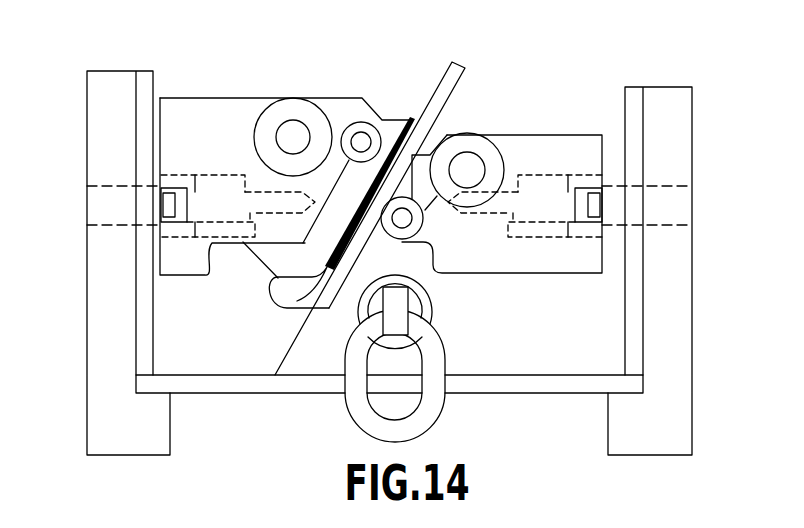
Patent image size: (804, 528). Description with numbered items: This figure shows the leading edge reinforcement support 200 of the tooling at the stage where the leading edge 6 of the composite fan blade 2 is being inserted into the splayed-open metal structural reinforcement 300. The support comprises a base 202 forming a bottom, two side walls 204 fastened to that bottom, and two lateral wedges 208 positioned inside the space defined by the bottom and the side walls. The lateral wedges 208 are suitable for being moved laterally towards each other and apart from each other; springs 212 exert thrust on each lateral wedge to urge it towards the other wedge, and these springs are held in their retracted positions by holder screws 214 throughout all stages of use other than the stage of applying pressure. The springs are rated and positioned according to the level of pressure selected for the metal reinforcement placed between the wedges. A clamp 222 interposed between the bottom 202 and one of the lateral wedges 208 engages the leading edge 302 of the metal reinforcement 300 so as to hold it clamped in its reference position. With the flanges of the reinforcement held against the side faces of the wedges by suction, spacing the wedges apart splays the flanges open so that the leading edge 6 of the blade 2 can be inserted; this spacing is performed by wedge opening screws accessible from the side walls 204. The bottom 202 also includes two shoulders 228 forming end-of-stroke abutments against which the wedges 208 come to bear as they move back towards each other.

The fan blade 2 is at (466, 86).
The leading edge 6 is at (414, 139).
The leading edge reinforcement support 200 is at (577, 104).
The base 202 is at (513, 343).
The side walls 204 is at (109, 172).
The lateral wedges 208 is at (199, 140).
The springs 212 is at (243, 180).
The holder screws 214 is at (256, 204).
The clamp 222 is at (262, 253).
The shoulders 228 is at (207, 262).
The metal structural reinforcement 300 is at (410, 108).
The leading edge of the metal reinforcement 302 is at (296, 305).